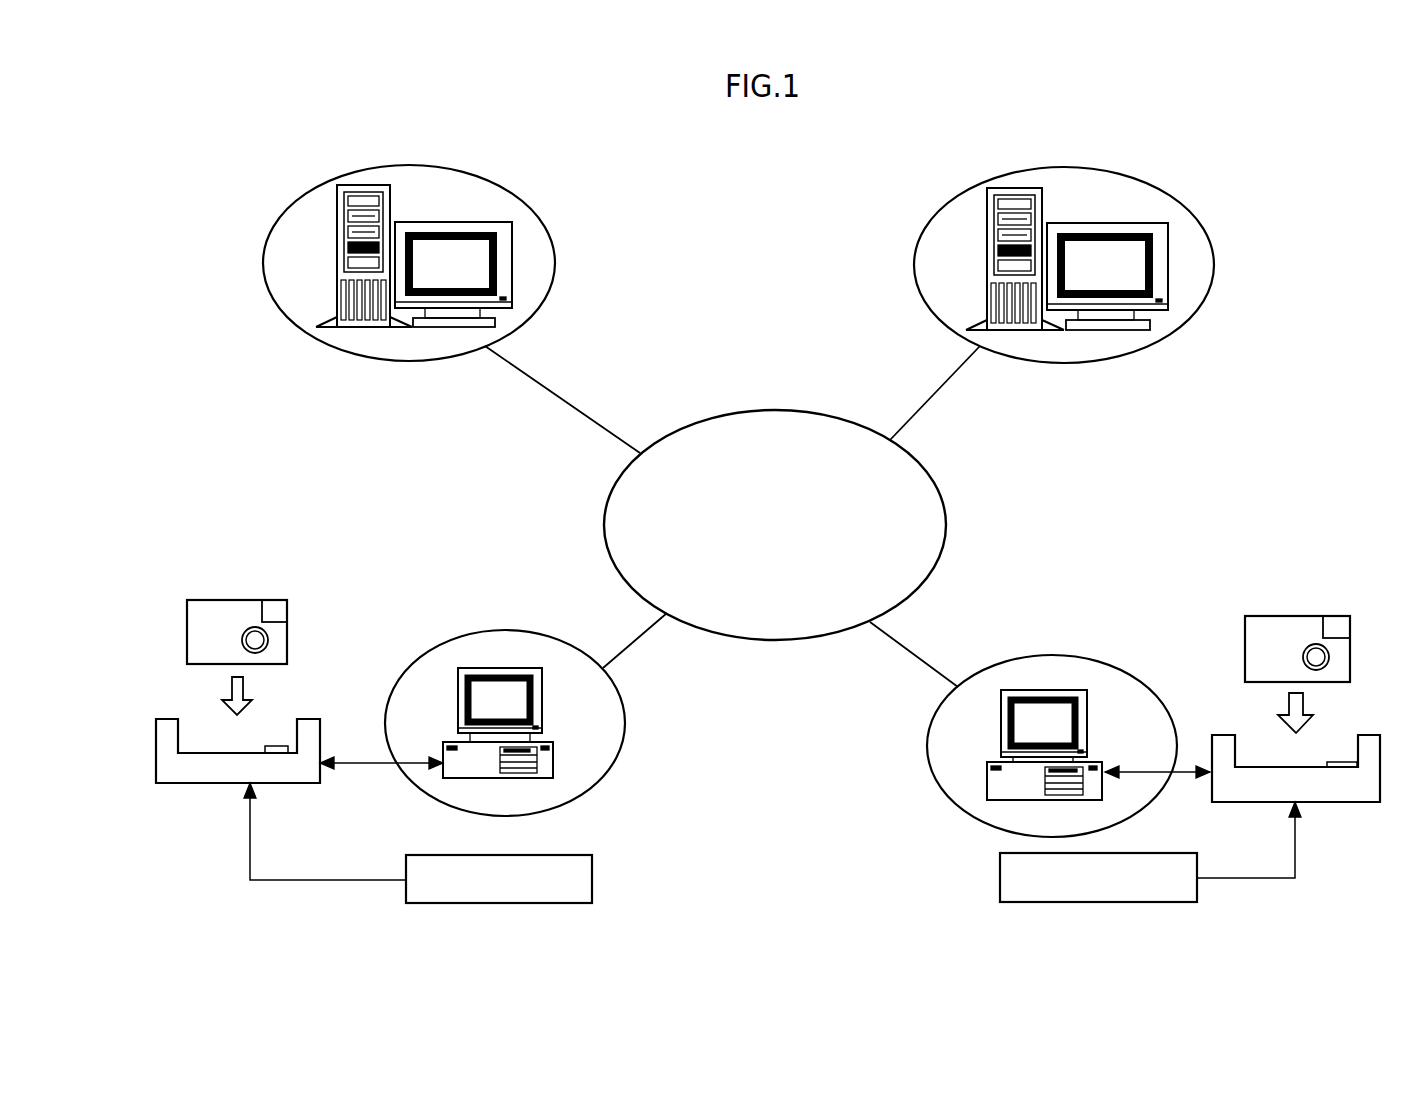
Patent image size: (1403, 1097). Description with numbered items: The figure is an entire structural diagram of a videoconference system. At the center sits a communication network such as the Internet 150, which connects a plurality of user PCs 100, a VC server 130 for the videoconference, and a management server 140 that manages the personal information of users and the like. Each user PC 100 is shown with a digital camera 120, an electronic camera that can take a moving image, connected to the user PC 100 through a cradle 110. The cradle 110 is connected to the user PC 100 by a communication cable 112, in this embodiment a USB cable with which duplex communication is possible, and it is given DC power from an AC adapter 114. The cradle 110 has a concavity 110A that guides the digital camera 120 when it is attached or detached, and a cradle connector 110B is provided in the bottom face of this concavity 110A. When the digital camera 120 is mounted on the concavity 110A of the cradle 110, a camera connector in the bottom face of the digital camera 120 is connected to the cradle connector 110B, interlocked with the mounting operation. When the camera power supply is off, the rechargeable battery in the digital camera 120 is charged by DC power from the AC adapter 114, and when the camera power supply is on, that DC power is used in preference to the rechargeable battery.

The user PC 100 is at (483, 630).
The cradle 110 is at (156, 729).
The concavity 110A is at (270, 727).
The cradle connector 110B is at (278, 746).
The communication cable 112 is at (367, 760).
The AC adapter 114 is at (593, 890).
The digital camera 120 is at (220, 605).
The VC server 130 is at (1197, 305).
The management server 140 is at (290, 287).
The Internet 150 is at (947, 527).